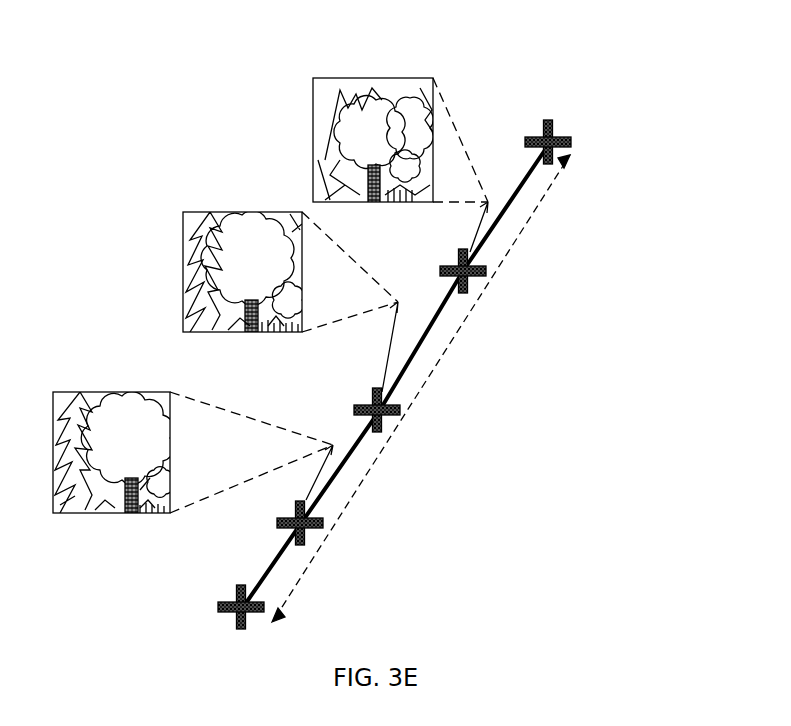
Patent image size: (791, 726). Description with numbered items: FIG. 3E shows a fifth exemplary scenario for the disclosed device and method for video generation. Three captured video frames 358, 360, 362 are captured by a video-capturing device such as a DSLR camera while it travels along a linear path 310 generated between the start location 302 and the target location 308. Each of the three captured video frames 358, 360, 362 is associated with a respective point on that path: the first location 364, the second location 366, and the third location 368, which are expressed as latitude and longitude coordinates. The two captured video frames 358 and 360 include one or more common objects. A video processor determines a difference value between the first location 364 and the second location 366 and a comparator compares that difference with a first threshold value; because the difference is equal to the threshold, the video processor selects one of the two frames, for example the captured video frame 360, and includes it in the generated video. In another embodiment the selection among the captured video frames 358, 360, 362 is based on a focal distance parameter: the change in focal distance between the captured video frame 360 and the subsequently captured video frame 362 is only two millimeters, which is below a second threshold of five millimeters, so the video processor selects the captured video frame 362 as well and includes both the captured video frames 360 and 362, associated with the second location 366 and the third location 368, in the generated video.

The start location 302 is at (228, 603).
The target location 308 is at (571, 141).
The linear path 310 is at (530, 217).
The captured video frame 358 is at (53, 392).
The captured video frame 360 is at (183, 212).
The captured video frame 362 is at (313, 78).
The first location 364 is at (318, 529).
The second location 366 is at (387, 418).
The third location 368 is at (470, 278).